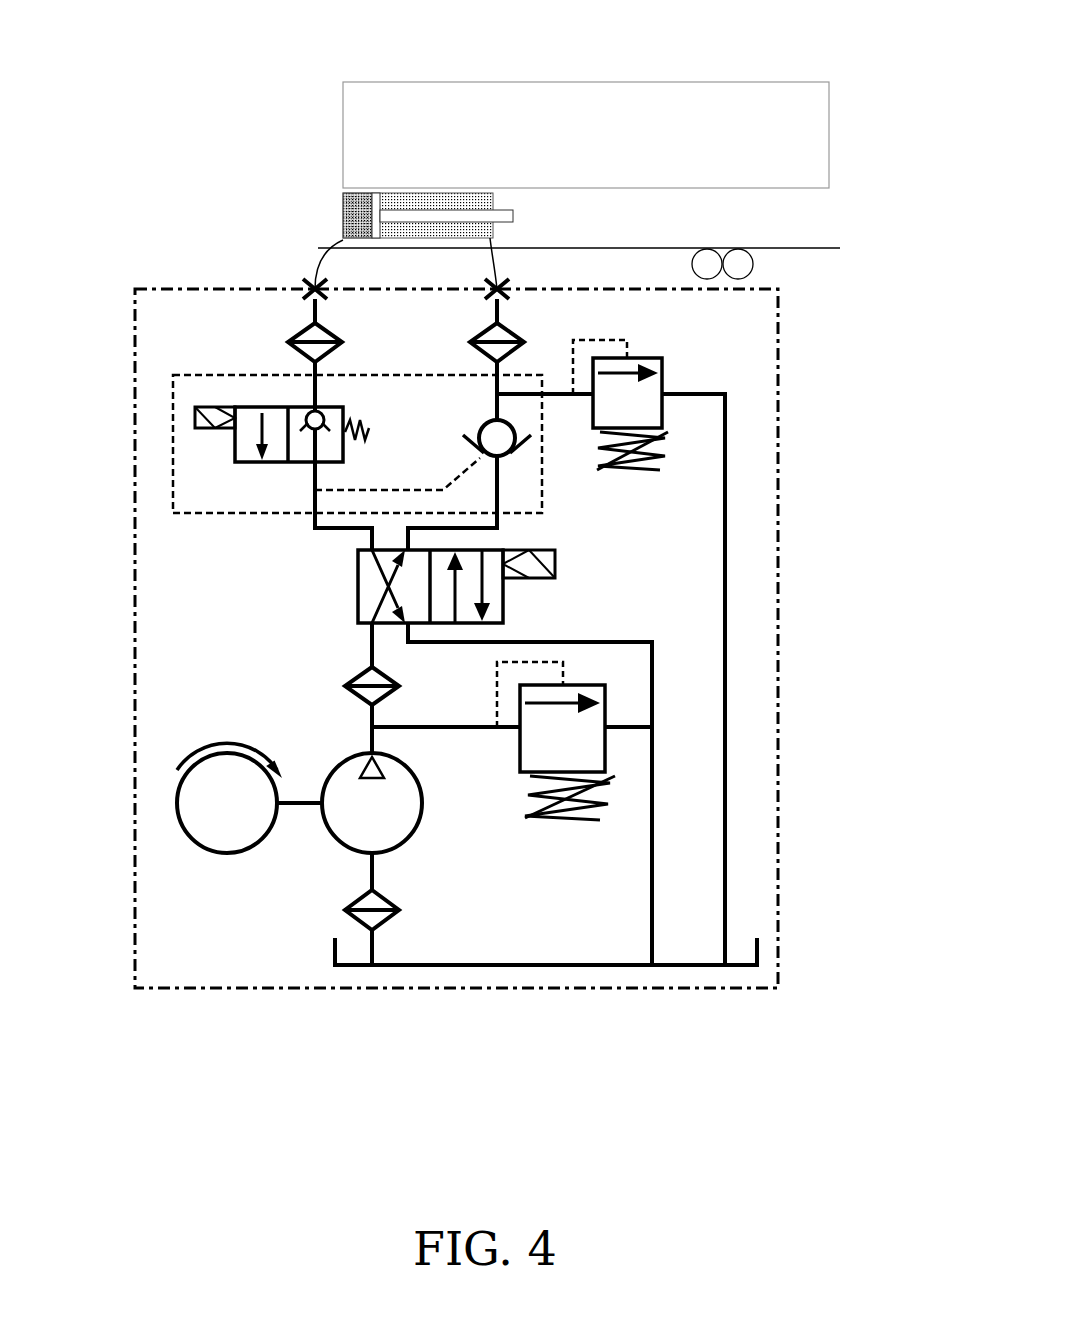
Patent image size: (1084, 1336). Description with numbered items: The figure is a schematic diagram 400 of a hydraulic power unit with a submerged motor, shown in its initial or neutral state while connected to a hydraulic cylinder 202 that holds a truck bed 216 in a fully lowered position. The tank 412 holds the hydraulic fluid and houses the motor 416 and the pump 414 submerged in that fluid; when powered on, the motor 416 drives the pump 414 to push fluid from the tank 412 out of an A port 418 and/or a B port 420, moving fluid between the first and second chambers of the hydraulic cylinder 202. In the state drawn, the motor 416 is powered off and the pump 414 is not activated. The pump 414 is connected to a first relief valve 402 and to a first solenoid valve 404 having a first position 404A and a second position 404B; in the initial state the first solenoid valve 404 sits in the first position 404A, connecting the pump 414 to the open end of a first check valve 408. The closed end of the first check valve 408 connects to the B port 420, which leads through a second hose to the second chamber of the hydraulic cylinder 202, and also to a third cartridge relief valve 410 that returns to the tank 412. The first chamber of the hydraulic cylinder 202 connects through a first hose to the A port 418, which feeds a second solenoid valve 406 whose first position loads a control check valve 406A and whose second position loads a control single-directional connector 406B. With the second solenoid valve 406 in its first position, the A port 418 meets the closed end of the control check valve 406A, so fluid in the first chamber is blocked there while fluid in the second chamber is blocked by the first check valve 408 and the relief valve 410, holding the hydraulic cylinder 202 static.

The schematic diagram 400 is at (833, 1121).
The truck bed 216 is at (732, 120).
The hydraulic cylinder 202 is at (327, 220).
The A port 418 is at (300, 282).
The B port 420 is at (515, 280).
The second solenoid valve 406 is at (309, 428).
The control check valve 406A is at (248, 395).
The control single-directional connector 406B is at (338, 398).
The first check valve 408 is at (513, 449).
The third cartridge relief valve 410 is at (637, 398).
The first solenoid valve 404 is at (558, 523).
The first position 404A is at (350, 600).
The second position 404B is at (507, 595).
The first relief valve 402 is at (569, 733).
The pump 414 is at (328, 848).
The motor 416 is at (183, 840).
The tank 412 is at (423, 967).